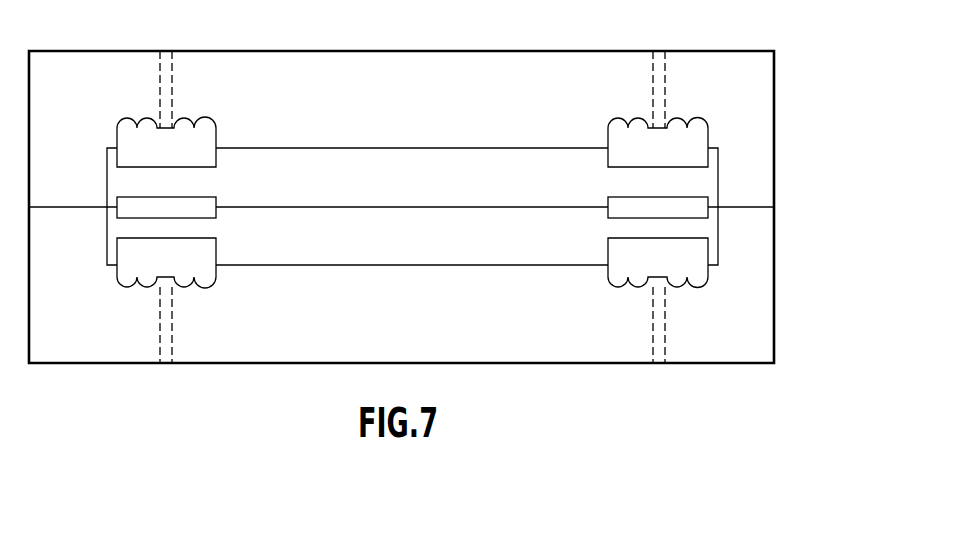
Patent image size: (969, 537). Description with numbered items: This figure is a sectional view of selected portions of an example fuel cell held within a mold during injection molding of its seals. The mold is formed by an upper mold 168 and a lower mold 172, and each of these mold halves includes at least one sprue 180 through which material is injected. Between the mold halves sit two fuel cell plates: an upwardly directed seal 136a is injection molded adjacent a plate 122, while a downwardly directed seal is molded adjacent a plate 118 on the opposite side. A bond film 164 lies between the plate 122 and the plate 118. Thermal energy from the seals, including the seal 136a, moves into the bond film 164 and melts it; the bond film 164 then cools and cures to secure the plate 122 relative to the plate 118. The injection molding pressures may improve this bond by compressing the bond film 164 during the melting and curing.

The upper mold 168 is at (762, 117).
The lower mold 172 is at (761, 294).
The plate 122 is at (120, 183).
The bond film 164 is at (126, 210).
The upwardly directed seal 136a is at (126, 133).
The plate 118 is at (117, 230).
The sprue 180 is at (158, 69).